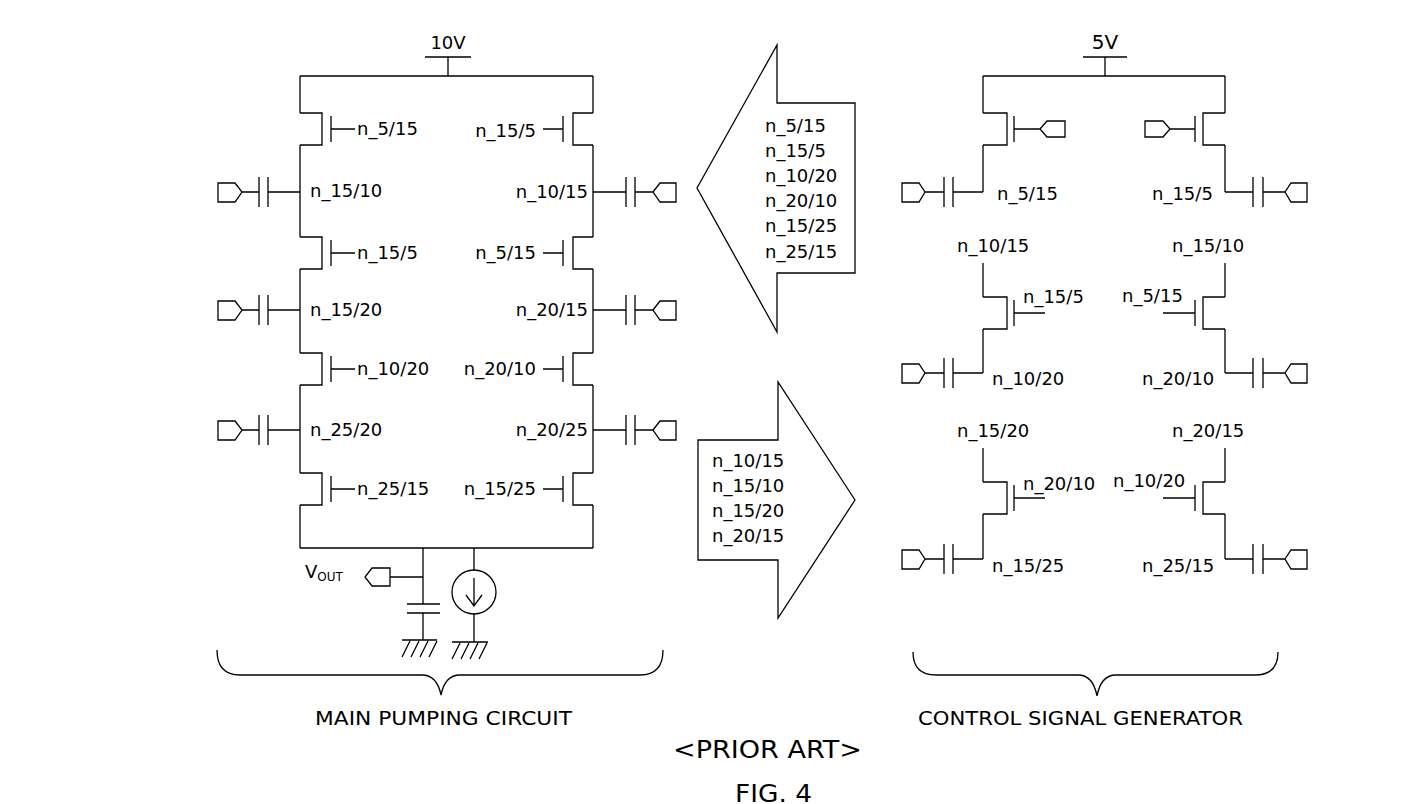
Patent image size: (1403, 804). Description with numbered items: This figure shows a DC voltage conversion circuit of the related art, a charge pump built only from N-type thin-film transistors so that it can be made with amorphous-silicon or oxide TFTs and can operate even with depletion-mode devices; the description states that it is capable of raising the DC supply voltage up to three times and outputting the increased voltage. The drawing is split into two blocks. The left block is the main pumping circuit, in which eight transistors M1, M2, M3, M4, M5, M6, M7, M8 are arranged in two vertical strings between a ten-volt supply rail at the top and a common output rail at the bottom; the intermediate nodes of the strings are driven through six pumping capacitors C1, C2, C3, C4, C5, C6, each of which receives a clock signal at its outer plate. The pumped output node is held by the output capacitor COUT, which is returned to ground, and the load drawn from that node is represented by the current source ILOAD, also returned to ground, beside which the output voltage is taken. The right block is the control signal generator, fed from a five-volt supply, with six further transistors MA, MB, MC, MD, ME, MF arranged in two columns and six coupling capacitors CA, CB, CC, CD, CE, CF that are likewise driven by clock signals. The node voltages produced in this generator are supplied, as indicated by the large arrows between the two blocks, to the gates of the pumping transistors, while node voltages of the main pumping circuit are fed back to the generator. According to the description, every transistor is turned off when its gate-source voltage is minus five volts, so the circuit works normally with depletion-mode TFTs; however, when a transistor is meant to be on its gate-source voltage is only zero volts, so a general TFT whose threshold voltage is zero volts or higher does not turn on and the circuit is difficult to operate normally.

The pumping transistor M1 is at (318, 129).
The pumping transistor M2 is at (571, 129).
The pumping transistor M3 is at (318, 253).
The pumping transistor M4 is at (571, 253).
The pumping transistor M5 is at (318, 369).
The pumping transistor M6 is at (571, 369).
The pumping transistor M7 is at (318, 489).
The pumping transistor M8 is at (571, 489).
The pumping capacitor C1 is at (233, 193).
The pumping capacitor C2 is at (645, 192).
The pumping capacitor C3 is at (233, 311).
The pumping capacitor C4 is at (652, 311).
The pumping capacitor C5 is at (233, 431).
The pumping capacitor C6 is at (652, 431).
The output capacitor COUT is at (393, 629).
The load current source ILOAD is at (498, 603).
The control signal generator transistor MA is at (1025, 117).
The control signal generator transistor MB is at (1175, 117).
The control signal generator transistor MC is at (1005, 313).
The control signal generator transistor MD is at (1199, 313).
The control signal generator transistor ME is at (1005, 498).
The control signal generator transistor MF is at (1199, 498).
The control signal generator capacitor CA is at (927, 193).
The control signal generator capacitor CB is at (1278, 193).
The control signal generator capacitor CC is at (927, 376).
The control signal generator capacitor CD is at (1278, 376).
The control signal generator capacitor CE is at (927, 563).
The control signal generator capacitor CF is at (1278, 563).